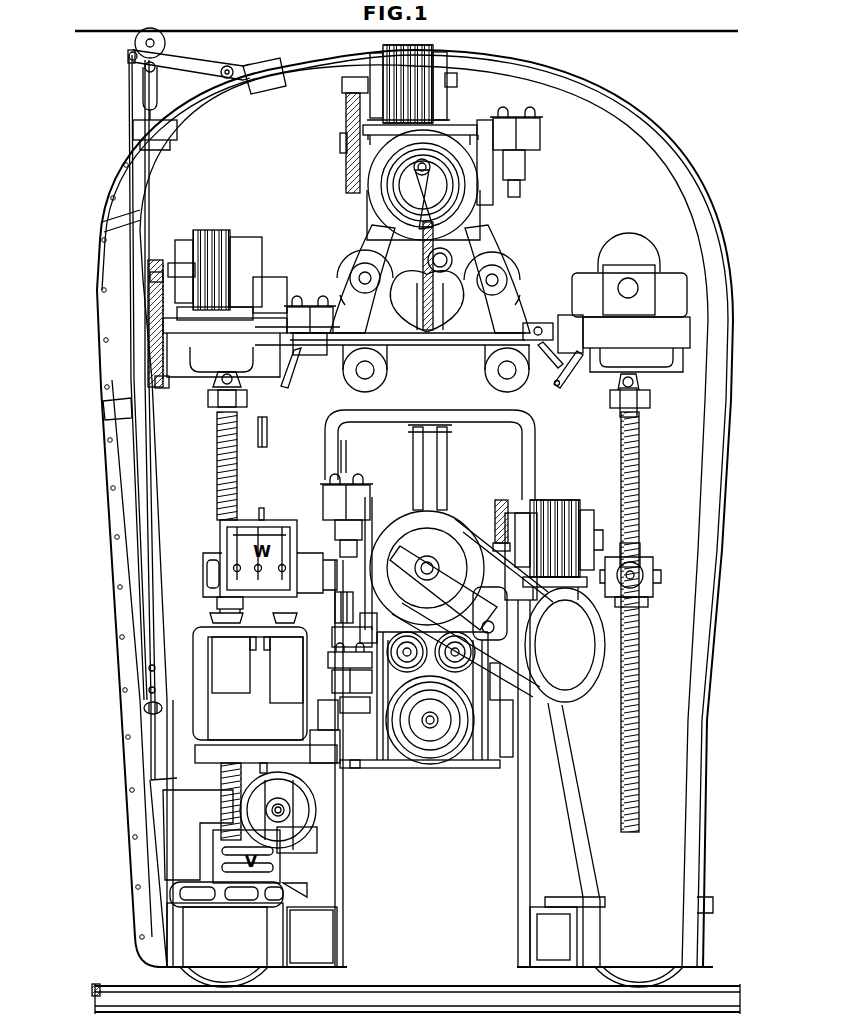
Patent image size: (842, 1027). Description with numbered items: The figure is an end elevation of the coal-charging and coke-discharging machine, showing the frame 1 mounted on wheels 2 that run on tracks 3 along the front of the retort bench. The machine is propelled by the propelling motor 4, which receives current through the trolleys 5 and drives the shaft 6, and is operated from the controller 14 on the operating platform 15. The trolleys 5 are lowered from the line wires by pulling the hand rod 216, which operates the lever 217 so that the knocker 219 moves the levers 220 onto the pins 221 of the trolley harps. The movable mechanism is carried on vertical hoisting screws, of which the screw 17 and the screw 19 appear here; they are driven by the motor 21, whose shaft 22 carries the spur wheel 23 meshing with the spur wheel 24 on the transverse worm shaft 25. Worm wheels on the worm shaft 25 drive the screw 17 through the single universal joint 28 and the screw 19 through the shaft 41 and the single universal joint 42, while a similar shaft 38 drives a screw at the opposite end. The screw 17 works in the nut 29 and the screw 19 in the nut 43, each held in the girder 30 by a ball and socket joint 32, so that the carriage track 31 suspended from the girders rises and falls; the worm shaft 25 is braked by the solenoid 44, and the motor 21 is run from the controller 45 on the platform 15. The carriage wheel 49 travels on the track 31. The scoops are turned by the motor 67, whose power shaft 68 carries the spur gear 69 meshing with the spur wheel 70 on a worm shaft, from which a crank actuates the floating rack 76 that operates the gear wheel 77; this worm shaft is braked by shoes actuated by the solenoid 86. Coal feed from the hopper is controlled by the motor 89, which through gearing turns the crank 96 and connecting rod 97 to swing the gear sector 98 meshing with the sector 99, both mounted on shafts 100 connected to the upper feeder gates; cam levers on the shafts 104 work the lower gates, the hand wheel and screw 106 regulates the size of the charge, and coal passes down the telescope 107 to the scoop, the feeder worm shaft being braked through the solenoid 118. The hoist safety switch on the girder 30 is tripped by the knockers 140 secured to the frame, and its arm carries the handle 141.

The frame 1 is at (672, 866).
The wheels 2 is at (262, 980).
The ways or tracks 3 is at (740, 1000).
The propelling motor 4 is at (287, 812).
The trolleys 5 is at (161, 45).
The shaft 6 is at (357, 77).
The controller 14 is at (396, 775).
The operating platform 15 is at (230, 747).
The screw 17 is at (210, 467).
The screw 19 is at (620, 451).
The motor 21 is at (238, 247).
The shaft 22 is at (160, 258).
The spur wheel 23 is at (150, 280).
The spur wheel 24 is at (172, 388).
The worm shaft 25 is at (335, 336).
The single universal joint 28 is at (247, 402).
The nut 29 is at (215, 603).
The girder 30 is at (206, 561).
The carriage track 31 is at (475, 766).
The ball and socket joint 32 is at (648, 570).
The shaft 38 is at (658, 590).
The shaft 41 is at (636, 372).
The single universal joint 42 is at (650, 402).
The nut 43 is at (638, 550).
The solenoid 44 is at (298, 294).
The controller 45 is at (250, 683).
The wheel 49 is at (348, 768).
The motor 67 is at (578, 509).
The power shaft 68 is at (512, 524).
The spur gear 69 is at (497, 510).
The spur wheel 70 is at (498, 497).
The floating rack 76 is at (487, 606).
The gear wheel 77 is at (500, 628).
The solenoid 86 is at (361, 487).
The motor 89 is at (437, 105).
The crank 96 is at (440, 180).
The connecting rod 97 is at (448, 200).
The gear sector 98 is at (449, 276).
The gear sector 99 is at (430, 279).
The shafts 100 is at (365, 278).
The shafts 104 is at (360, 373).
The hand wheel and screw 106 is at (569, 370).
The telescope 107 is at (447, 448).
The solenoid 118 is at (531, 127).
The knockers 140 is at (268, 430).
The handle 141 is at (263, 517).
The hand rod 216 is at (134, 712).
The lever 217 is at (189, 56).
The knocker 219 is at (232, 70).
The levers 220 is at (175, 70).
The pins 221 is at (140, 70).